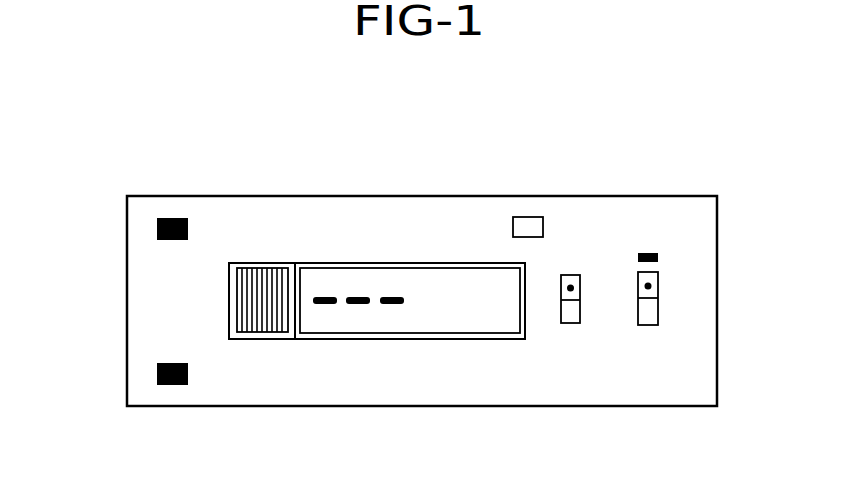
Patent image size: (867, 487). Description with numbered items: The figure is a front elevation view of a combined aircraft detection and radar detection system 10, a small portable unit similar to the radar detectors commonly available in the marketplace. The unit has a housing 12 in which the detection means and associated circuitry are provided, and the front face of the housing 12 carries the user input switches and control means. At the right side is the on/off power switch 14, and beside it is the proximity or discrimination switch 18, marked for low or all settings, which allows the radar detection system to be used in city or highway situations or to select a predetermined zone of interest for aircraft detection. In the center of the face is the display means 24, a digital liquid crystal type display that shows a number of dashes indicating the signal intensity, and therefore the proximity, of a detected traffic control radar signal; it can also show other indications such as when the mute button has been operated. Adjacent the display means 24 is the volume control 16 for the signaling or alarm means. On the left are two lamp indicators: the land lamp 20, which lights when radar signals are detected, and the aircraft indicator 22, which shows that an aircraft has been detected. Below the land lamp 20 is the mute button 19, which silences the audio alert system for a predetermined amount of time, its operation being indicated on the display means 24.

The detection system 10 is at (112, 170).
The housing 12 is at (395, 196).
The on/off power switch 14 is at (656, 308).
The volume control 16 is at (245, 303).
The proximity or discrimination switch 18 is at (582, 286).
The mute button 19 is at (157, 375).
The land lamp 20 is at (157, 227).
The aircraft lamp indicator 22 is at (528, 217).
The display means 24 is at (356, 283).